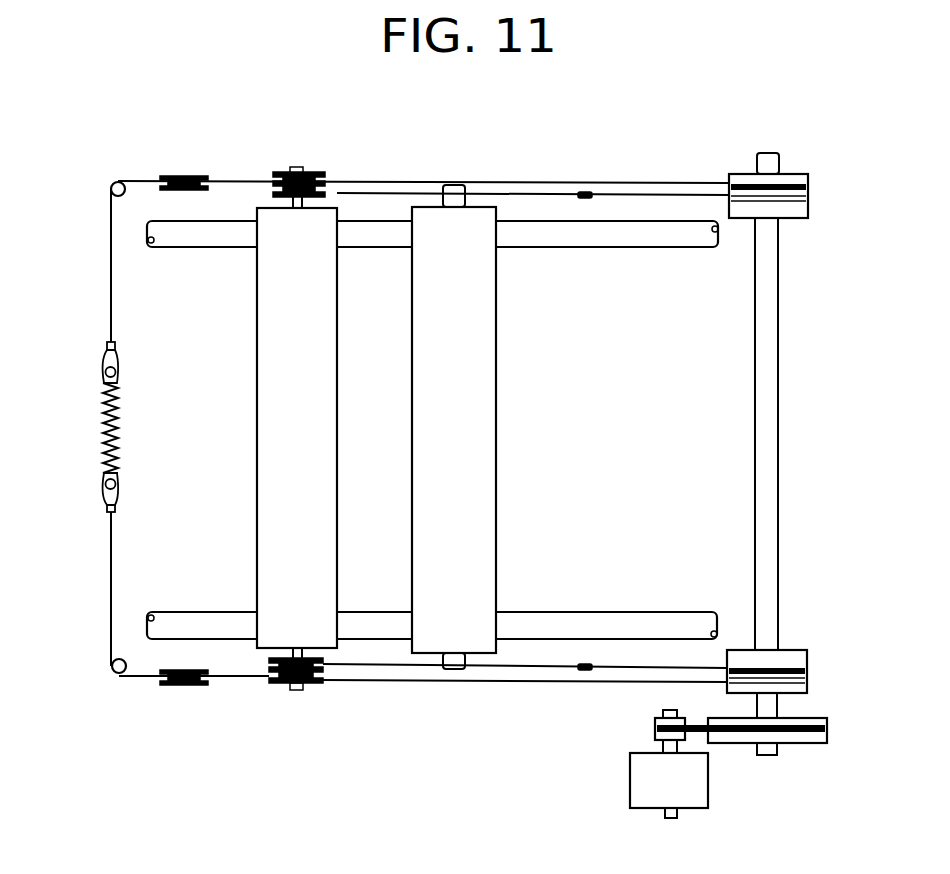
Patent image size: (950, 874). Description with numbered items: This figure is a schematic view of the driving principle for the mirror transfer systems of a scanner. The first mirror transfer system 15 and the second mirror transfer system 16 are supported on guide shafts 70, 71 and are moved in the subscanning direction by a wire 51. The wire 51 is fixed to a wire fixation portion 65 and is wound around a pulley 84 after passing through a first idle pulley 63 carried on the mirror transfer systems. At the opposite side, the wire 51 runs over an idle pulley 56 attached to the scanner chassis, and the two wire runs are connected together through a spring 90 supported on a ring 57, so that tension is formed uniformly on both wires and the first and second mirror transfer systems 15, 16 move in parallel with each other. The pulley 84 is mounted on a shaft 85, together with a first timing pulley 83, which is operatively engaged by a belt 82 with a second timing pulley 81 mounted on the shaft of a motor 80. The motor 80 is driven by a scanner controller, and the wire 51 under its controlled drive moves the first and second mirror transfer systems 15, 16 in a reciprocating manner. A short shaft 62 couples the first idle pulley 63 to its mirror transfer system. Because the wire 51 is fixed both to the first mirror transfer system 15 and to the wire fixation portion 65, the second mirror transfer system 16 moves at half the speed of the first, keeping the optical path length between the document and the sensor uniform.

The first mirror transfer system 15 is at (496, 537).
The second mirror transfer system 16 is at (257, 518).
The wire 51 is at (388, 181).
The idle pulley 56 is at (175, 178).
The ring 57 is at (112, 182).
The shaft 62 is at (278, 190).
The first idle pulley 63 is at (292, 169).
The wire fixation portion 65 is at (586, 191).
The guide shaft 70 is at (597, 614).
The guide shaft 71 is at (626, 248).
The motor 80 is at (706, 802).
The second timing pulley 81 is at (655, 738).
The belt 82 is at (695, 735).
The first timing pulley 83 is at (818, 745).
The pulley 84 is at (790, 212).
The shaft 85 is at (755, 509).
The spring 90 is at (103, 420).